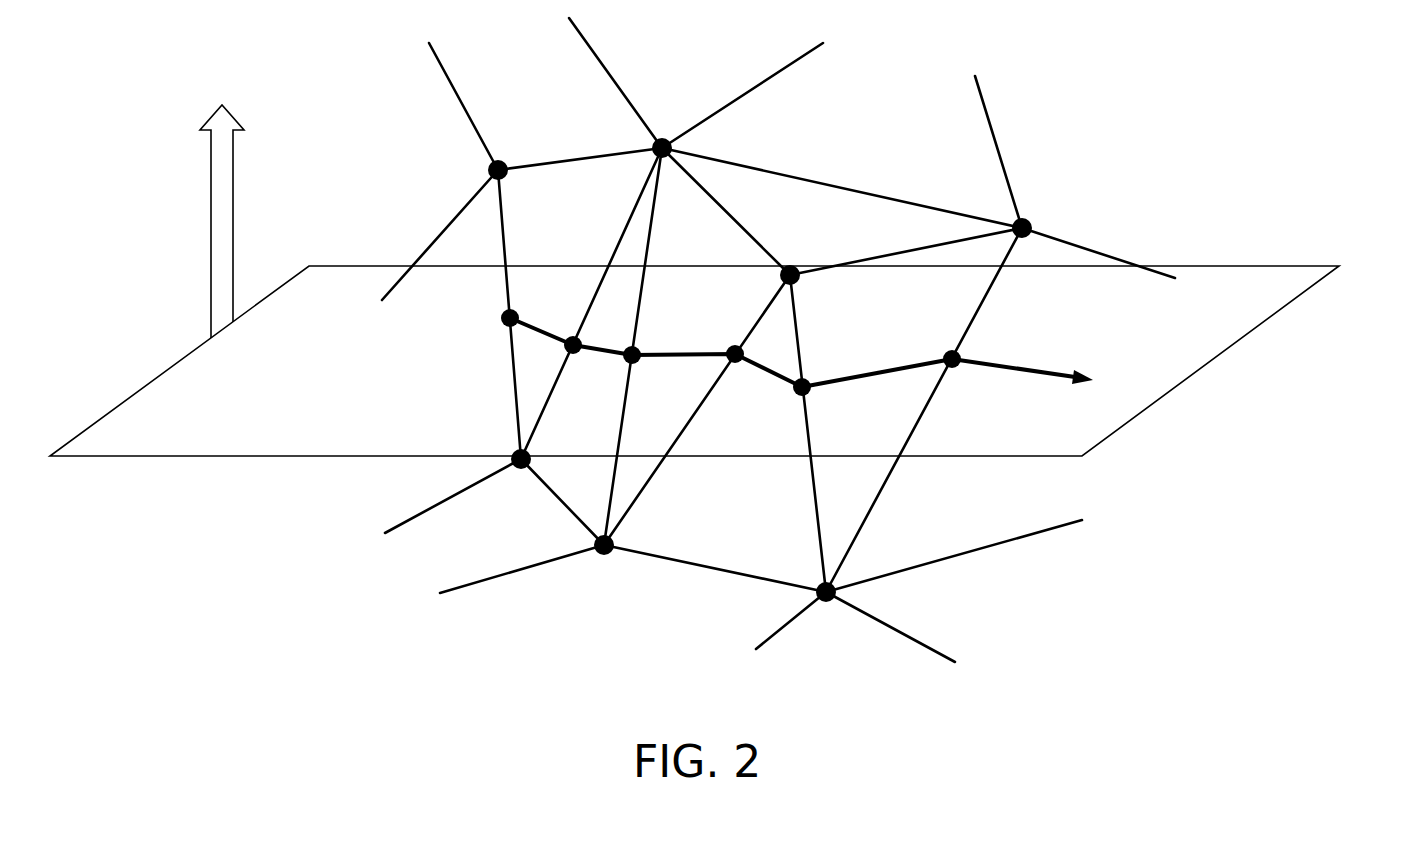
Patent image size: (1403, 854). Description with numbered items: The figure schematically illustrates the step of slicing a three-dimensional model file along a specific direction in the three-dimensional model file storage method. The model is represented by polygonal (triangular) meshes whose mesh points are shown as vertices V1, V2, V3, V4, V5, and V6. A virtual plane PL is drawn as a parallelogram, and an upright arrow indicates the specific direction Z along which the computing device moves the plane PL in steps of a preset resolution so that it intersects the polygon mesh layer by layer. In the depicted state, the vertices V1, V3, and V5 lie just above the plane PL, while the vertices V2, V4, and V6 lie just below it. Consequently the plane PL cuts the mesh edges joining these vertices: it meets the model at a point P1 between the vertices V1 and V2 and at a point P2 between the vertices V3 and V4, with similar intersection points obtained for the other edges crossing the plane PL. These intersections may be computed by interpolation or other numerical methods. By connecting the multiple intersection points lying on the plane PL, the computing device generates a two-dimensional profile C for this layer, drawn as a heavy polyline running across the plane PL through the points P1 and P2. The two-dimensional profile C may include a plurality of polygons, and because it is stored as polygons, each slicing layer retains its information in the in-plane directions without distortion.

The vertex V1 is at (502, 158).
The vertex V2 is at (522, 468).
The vertex V3 is at (663, 138).
The vertex V4 is at (603, 555).
The vertex V5 is at (793, 267).
The vertex V6 is at (825, 602).
The point P1 is at (513, 303).
The point P2 is at (640, 345).
The 2D profile C is at (1046, 365).
The virtual plane PL is at (1261, 243).
The specific direction Z is at (223, 105).